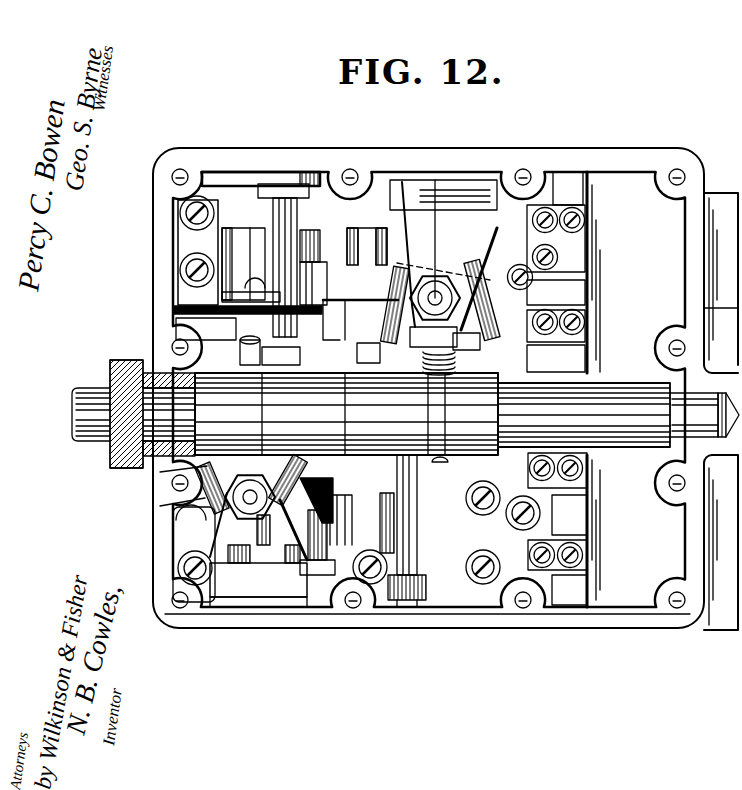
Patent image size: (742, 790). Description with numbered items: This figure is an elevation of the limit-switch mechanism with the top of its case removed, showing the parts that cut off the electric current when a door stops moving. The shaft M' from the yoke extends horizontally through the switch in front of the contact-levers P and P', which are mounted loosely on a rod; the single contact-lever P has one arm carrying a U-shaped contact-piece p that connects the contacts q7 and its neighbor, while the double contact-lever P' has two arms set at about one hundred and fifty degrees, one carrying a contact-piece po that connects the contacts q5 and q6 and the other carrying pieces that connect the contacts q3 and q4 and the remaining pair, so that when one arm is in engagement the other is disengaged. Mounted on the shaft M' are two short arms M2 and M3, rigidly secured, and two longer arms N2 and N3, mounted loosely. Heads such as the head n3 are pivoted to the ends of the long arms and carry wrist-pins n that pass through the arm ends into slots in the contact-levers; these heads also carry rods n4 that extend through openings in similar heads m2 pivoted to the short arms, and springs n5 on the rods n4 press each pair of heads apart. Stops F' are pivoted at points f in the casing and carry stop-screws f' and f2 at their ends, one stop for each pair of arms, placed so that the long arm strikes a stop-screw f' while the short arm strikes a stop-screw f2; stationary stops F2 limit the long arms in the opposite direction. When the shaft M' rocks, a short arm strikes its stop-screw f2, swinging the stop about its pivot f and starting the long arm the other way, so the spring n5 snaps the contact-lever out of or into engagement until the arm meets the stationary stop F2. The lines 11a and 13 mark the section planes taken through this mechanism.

The shaft M' is at (405, 395).
The head m2 is at (192, 366).
The short arm M2 is at (346, 414).
The long arm N2 is at (282, 414).
The single contact-lever P is at (356, 414).
The double contact-lever P' is at (340, 536).
The long arm N3 is at (409, 414).
The spring n5 is at (442, 414).
The short arm M3 is at (476, 414).
The section line 11a is at (49, 440).
The contact q5 is at (222, 207).
The U-shaped contact-piece po is at (237, 270).
The contact q6 is at (307, 200).
The stationary stop F2 is at (434, 523).
The rod n4 is at (447, 477).
The contact q7 is at (353, 237).
The U-shaped contact-piece p is at (360, 270).
The wrist-pin n is at (368, 353).
The pivot point f is at (306, 361).
The pivoted stop F' is at (365, 311).
The stop-screw f' is at (325, 390).
The stop-screw f2 is at (482, 344).
The head n3 is at (450, 350).
The contact q3 is at (318, 520).
The contact q4 is at (380, 513).
The section line 13 is at (520, 652).